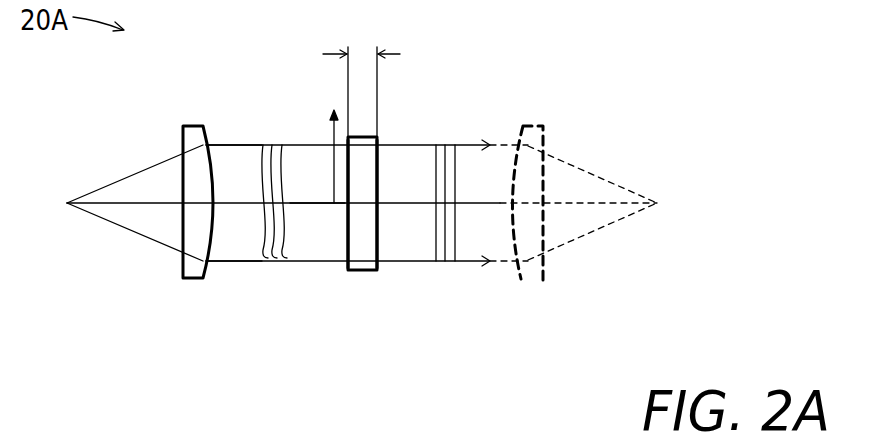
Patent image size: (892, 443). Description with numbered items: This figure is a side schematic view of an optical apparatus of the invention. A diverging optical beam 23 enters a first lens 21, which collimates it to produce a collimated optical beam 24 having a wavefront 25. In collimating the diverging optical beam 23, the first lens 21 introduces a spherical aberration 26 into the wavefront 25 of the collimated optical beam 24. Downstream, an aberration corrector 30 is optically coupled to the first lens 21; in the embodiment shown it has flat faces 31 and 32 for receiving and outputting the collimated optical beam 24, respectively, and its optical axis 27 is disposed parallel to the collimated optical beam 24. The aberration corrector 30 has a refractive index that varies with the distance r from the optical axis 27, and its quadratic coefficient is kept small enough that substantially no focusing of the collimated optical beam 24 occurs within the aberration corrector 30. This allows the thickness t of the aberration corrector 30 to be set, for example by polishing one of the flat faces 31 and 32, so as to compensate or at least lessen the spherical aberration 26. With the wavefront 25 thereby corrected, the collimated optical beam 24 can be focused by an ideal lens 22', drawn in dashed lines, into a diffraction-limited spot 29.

The first lens 21 is at (190, 280).
The ideal lens 22' is at (520, 247).
The diverging optical beam 23 is at (118, 215).
The collimated optical beam 24 is at (223, 153).
The wavefront 25 is at (285, 150).
The spherical aberration 26 is at (307, 246).
The optical axis 27 is at (413, 203).
The diffraction-limited spot 29 is at (676, 206).
The aberration corrector 30 is at (358, 272).
The flat face 31 is at (347, 242).
The flat face 32 is at (377, 242).